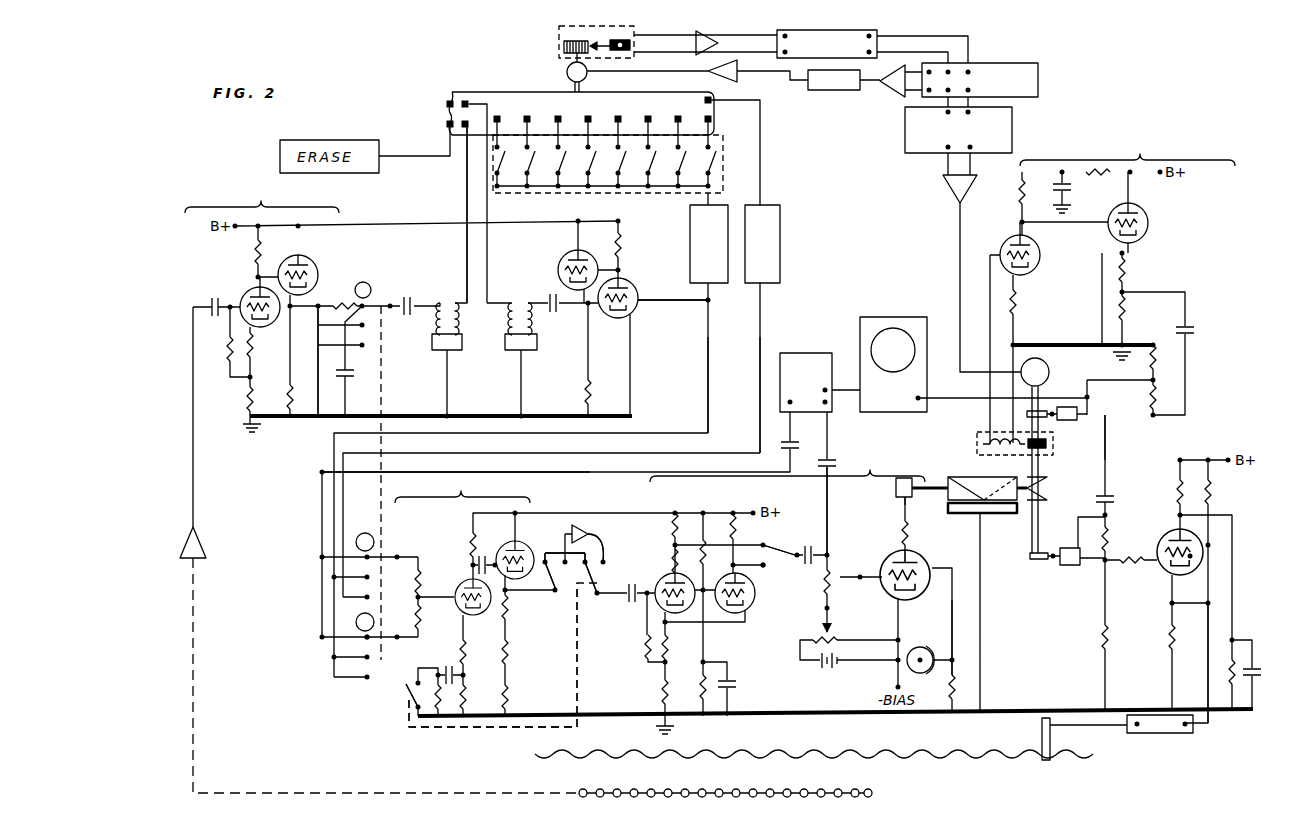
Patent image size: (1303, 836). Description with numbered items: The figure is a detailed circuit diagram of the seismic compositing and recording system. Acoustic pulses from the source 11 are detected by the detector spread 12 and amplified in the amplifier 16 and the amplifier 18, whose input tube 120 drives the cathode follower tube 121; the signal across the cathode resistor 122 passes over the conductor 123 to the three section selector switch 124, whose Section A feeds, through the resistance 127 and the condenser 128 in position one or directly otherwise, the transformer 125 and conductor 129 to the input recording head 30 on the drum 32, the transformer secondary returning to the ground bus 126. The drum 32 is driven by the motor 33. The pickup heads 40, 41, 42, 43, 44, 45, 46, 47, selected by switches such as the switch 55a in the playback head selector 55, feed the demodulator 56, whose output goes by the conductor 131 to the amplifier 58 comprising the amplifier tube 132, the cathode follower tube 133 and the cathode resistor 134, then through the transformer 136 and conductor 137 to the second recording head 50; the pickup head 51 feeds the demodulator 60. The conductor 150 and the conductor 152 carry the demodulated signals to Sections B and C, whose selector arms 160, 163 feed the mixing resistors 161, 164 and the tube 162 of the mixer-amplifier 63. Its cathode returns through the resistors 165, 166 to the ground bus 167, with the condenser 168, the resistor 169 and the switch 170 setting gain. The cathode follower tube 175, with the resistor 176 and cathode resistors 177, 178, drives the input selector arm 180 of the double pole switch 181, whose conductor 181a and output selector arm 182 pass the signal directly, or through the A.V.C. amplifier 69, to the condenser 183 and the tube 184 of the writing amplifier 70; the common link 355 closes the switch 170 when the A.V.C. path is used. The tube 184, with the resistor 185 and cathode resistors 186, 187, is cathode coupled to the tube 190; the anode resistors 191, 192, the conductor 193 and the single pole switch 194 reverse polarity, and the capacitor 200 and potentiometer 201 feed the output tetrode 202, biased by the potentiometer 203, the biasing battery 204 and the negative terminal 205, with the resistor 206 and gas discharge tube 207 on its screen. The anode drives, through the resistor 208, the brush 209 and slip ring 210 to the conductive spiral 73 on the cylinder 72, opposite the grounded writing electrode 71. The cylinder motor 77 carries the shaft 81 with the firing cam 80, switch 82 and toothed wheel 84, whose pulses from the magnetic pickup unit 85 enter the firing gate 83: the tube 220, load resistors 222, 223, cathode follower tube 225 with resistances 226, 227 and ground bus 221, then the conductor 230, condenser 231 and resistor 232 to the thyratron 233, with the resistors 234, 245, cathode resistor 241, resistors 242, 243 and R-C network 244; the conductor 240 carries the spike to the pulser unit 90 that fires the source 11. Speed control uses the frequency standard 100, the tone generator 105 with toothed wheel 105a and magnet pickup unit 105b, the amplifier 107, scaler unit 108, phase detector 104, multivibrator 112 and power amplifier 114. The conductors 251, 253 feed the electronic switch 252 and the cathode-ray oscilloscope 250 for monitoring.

The source 11 is at (1050, 758).
The detector spread 12 is at (740, 790).
The amplifier 16 is at (201, 541).
The amplifier 18 is at (267, 194).
The input recording head 30 is at (463, 128).
The drum 32 is at (532, 97).
The motor 33 is at (588, 76).
The pickup head 40 is at (497, 142).
The pickup head 41 is at (527, 142).
The pickup head 42 is at (558, 142).
The pickup head 43 is at (588, 142).
The pickup head 44 is at (618, 142).
The pickup head 45 is at (648, 142).
The pickup head 46 is at (677, 142).
The pickup head 47 is at (703, 145).
The second recording head 50 is at (466, 100).
The pickup head 51 is at (705, 97).
The playback head selector 55 is at (723, 147).
The switch 55a is at (503, 165).
The demodulator 56 is at (690, 218).
The amplifier 58 is at (608, 250).
The demodulator 60 is at (782, 235).
The mixer-amplifier 63 is at (467, 489).
The A.V.C. amplifier 69 is at (589, 532).
The writing amplifier 70 is at (888, 462).
The writing electrode 71 is at (984, 514).
The cylinder 72 is at (985, 484).
The conductive spiral 73 is at (950, 484).
The motor 77 is at (1050, 369).
The firing cam 80 is at (1035, 560).
The shaft 81 is at (1040, 513).
The switch 82 is at (1068, 566).
The firing gate 83 is at (1150, 152).
The pulse generator toothed wheel 84 is at (1048, 444).
The magnetic pickup unit 85 is at (987, 442).
The pulser unit 90 is at (1130, 730).
The frequency standard 100 is at (1012, 130).
The phase detector 104 is at (1038, 80).
The tone generator 105 is at (561, 53).
The toothed wheel 105a is at (560, 38).
The magnet pickup unit 105b is at (628, 44).
The amplifier 107 is at (705, 37).
The scaler unit 108 is at (822, 30).
The multivibrator 112 is at (840, 92).
The power amplifier 114 is at (735, 80).
The input tube 120 is at (244, 292).
The cathode follower tube 121 is at (307, 257).
The cathode resistor 122 is at (290, 388).
The conductor 123 is at (318, 367).
The three section, three position selector switch 124 is at (375, 276).
The transformer 125 is at (442, 302).
The ground bus 126 is at (503, 413).
The resistance 127 is at (345, 302).
The condenser 128 is at (353, 373).
The conductor 129 is at (467, 243).
The conductor 131 is at (646, 304).
The amplifier tube 132 is at (637, 290).
The cathode follower tube 133 is at (566, 258).
The cathode resistor 134 is at (586, 393).
The transformer 136 is at (522, 302).
The conductor 137 is at (487, 243).
The conductor 150 is at (706, 373).
The conductor 152 is at (762, 312).
The selector arm 160 is at (386, 552).
The mixing resistor 161 is at (422, 576).
The tube 162 is at (456, 589).
The selector arm 163 is at (387, 641).
The mixing resistor 164 is at (422, 631).
The resistor 165 is at (467, 652).
The resistor 166 is at (468, 698).
The ground bus 167 is at (527, 720).
The condenser 168 is at (448, 670).
The resistor 169 is at (443, 710).
The switch 170 is at (408, 685).
The cathode follower tube 175 is at (520, 544).
The resistor 176 is at (508, 658).
The cathode resistor 177 is at (508, 624).
The cathode resistor 178 is at (509, 697).
The input selector arm 180 is at (549, 580).
The double pole, double throw switch 181 is at (578, 579).
The conductor 181a is at (616, 548).
The output selector arm 182 is at (591, 579).
The condenser 183 is at (632, 601).
The tube 184 is at (660, 586).
The resistor 185 is at (646, 645).
The cathode resistor 186 is at (668, 645).
The cathode resistor 187 is at (664, 692).
The tube 190 is at (756, 600).
The anode resistor 191 is at (672, 555).
The anode resistor 192 is at (672, 530).
The conductor 193 is at (742, 545).
The single pole, double throw switch 194 is at (816, 540).
The capacitor 200 is at (782, 566).
The potentiometer 201 is at (825, 578).
The output tetrode 202 is at (926, 561).
The potentiometer 203 is at (819, 640).
The biasing battery 204 is at (826, 672).
The terminal 205 is at (950, 690).
The resistor 206 is at (955, 685).
The gas discharge tube 207 is at (930, 641).
The resistor 208 is at (910, 530).
The brush 209 is at (903, 500).
The slip ring 210 is at (896, 488).
The tube 220 is at (1040, 253).
The ground bus 221 is at (1085, 343).
The load resistor 222 is at (1018, 204).
The load resistor 223 is at (1096, 176).
The cathode follower tube 225 is at (1148, 212).
The resistance 226 is at (1125, 272).
The resistance 227 is at (1125, 312).
The conductor 230 is at (1108, 437).
The condenser 231 is at (1113, 497).
The resistor 232 is at (1110, 540).
The thyratron 233 is at (1170, 532).
The resistor 234 is at (1103, 641).
The conductor 240 is at (1206, 635).
The cathode resistor 241 is at (1168, 641).
The resistor 242 is at (1212, 490).
The resistor 243 is at (1177, 485).
The R-C network 244 is at (1240, 670).
The resistor 245 is at (1135, 566).
The cathode-ray oscilloscope 250 is at (915, 315).
The conductor 251 is at (535, 474).
The electronic switch 252 is at (832, 352).
The conductor 253 is at (829, 508).
The common link 355 is at (577, 677).